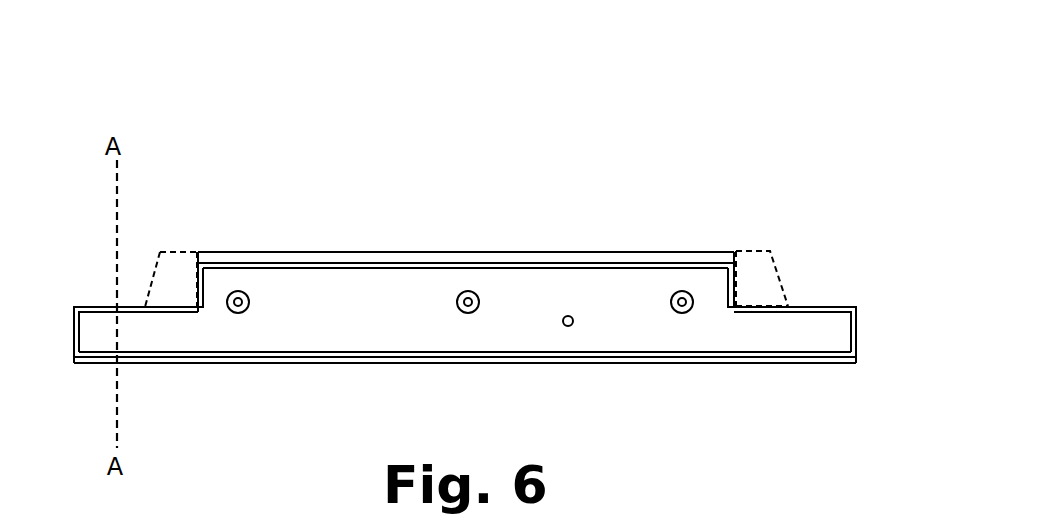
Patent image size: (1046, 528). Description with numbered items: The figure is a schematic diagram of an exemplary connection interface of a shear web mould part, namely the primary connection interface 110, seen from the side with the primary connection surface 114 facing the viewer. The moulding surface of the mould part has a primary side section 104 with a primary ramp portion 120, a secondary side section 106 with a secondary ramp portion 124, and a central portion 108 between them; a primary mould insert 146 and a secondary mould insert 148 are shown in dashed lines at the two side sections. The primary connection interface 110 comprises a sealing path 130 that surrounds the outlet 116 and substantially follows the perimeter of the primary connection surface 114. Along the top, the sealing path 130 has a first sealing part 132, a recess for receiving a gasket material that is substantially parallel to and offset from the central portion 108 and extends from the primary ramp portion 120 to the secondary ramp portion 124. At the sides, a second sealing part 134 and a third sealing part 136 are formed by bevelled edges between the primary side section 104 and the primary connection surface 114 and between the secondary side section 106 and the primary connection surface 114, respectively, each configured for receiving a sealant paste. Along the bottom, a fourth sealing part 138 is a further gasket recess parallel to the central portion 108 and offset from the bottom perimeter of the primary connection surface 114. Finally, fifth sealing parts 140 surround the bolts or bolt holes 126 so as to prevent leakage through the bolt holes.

The primary side section 104 is at (89, 174).
The secondary side section 106 is at (803, 216).
The central portion 108 is at (522, 251).
The primary connection interface 110 is at (718, 106).
The primary connection surface 114 is at (331, 296).
The outlet 116 is at (568, 315).
The primary ramp portion 120 is at (194, 256).
The secondary ramp portion 124 is at (737, 257).
The bolt 126 is at (238, 313).
The sealing path 130 is at (390, 262).
The first sealing part 132 is at (302, 267).
The second sealing part 134 is at (105, 306).
The third sealing part 136 is at (820, 308).
The fourth sealing part 138 is at (200, 356).
The fifth sealing part 140 is at (238, 290).
The primary mould insert 146 is at (165, 280).
The secondary mould insert 148 is at (766, 272).